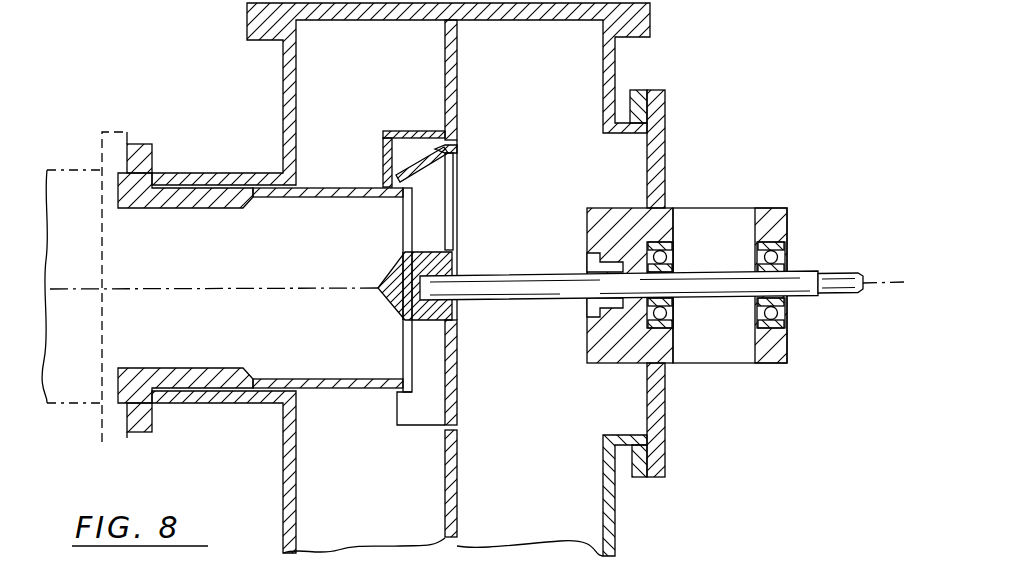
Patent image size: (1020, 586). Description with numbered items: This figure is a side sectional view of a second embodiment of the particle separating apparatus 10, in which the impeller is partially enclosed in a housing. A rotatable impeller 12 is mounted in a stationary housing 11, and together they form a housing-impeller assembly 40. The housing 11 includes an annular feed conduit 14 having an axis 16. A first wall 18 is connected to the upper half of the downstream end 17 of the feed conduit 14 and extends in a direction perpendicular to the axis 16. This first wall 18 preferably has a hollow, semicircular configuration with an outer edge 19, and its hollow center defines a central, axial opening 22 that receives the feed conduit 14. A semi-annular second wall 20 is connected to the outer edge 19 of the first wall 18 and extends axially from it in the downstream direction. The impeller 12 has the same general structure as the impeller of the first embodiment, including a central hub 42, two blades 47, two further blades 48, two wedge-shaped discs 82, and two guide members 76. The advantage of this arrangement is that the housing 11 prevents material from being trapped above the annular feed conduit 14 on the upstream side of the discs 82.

The particle separating apparatus 10 is at (222, 254).
The stationary housing 11 is at (374, 136).
The rotatable impeller 12 is at (417, 155).
The annular feed conduit 14 is at (336, 379).
The axis 16 is at (190, 290).
The downstream end 17 is at (394, 392).
The first wall 18 is at (384, 160).
The outer edge 19 is at (388, 130).
The second wall 20 is at (443, 132).
The central axial opening 22 is at (390, 192).
The housing-impeller assembly 40 is at (386, 68).
The central hub 42 is at (404, 298).
The blades 47 is at (420, 232).
The blades 48 is at (427, 405).
The guide members 76 is at (448, 151).
The wedge-shaped discs 82 is at (458, 340).